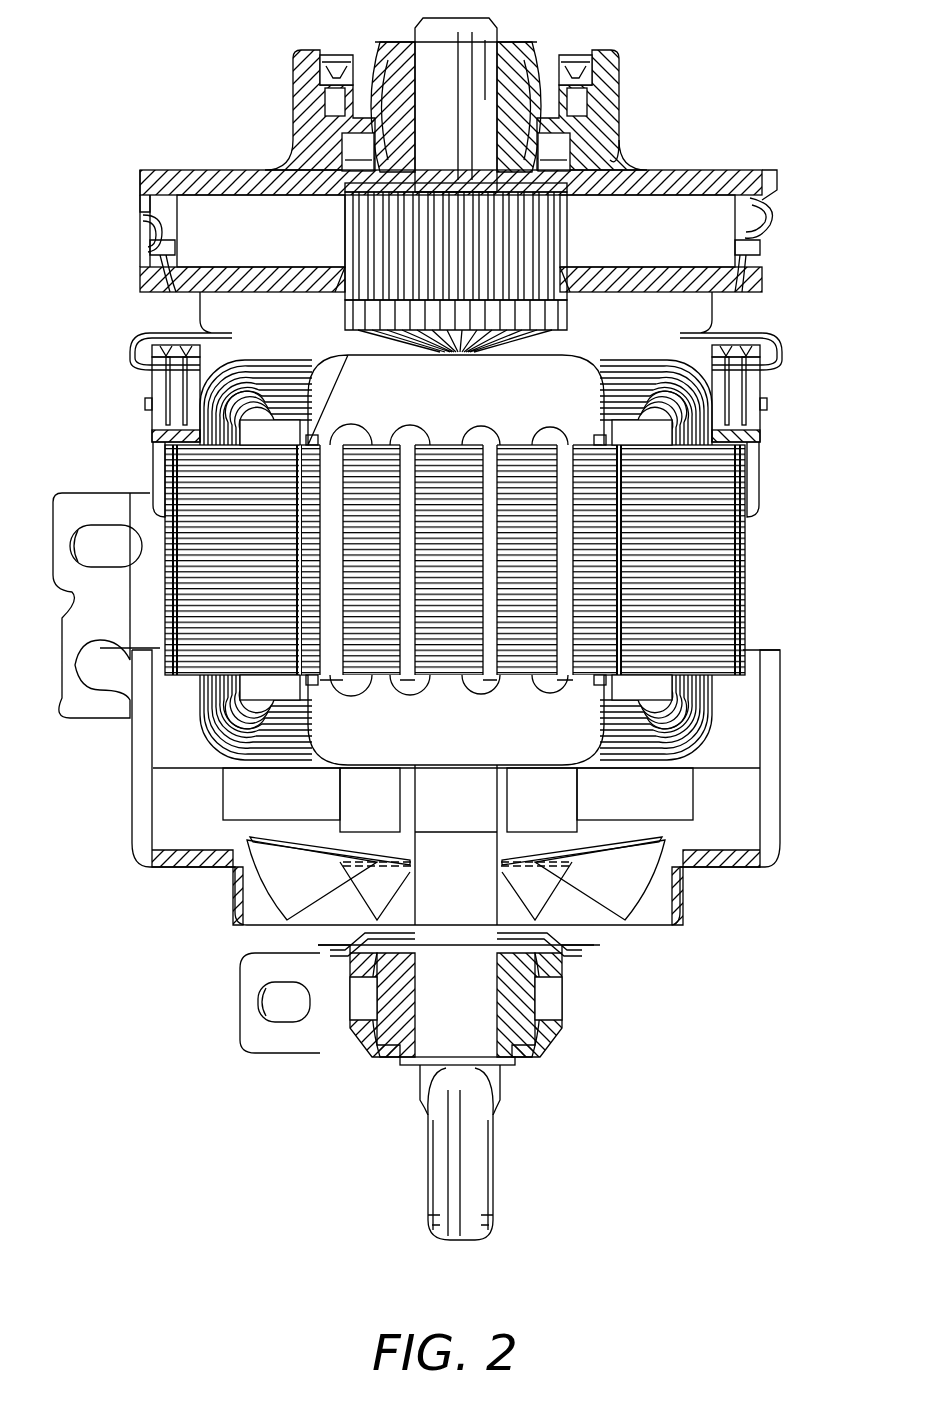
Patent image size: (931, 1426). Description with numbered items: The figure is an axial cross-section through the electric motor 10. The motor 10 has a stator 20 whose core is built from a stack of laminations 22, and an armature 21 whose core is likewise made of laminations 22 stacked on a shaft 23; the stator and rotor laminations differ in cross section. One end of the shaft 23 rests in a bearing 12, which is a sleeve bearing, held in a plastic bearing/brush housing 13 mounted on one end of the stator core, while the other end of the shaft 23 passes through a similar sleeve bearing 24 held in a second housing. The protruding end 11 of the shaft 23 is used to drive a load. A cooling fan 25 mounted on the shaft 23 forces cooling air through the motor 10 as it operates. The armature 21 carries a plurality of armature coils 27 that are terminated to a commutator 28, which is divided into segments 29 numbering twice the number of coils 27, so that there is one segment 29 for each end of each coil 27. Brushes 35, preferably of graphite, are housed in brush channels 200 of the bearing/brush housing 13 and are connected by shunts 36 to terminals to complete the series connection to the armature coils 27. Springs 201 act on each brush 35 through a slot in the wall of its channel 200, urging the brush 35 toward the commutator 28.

The motor 10 is at (705, 106).
The protruding end of shaft 11 is at (487, 1185).
The bearing 12 is at (392, 48).
The bearing/brush housing 13 is at (605, 73).
The stator 20 is at (742, 622).
The armature 21 is at (362, 688).
The laminations 22 is at (740, 522).
The shaft 23 is at (497, 45).
The sleeve bearing 24 is at (528, 1030).
The cooling fan 25 is at (275, 893).
The armature coils 27 is at (580, 735).
The commutator 28 is at (607, 157).
The segments 29 is at (543, 283).
The brushes 35 is at (192, 207).
The shunts 36 is at (150, 252).
The brush channels 200 is at (222, 205).
The springs 201 is at (150, 218).